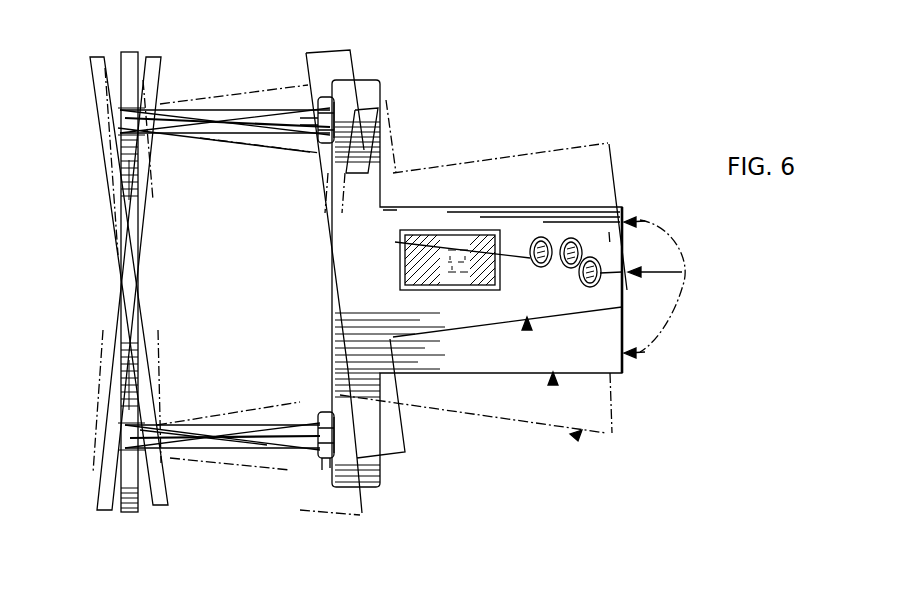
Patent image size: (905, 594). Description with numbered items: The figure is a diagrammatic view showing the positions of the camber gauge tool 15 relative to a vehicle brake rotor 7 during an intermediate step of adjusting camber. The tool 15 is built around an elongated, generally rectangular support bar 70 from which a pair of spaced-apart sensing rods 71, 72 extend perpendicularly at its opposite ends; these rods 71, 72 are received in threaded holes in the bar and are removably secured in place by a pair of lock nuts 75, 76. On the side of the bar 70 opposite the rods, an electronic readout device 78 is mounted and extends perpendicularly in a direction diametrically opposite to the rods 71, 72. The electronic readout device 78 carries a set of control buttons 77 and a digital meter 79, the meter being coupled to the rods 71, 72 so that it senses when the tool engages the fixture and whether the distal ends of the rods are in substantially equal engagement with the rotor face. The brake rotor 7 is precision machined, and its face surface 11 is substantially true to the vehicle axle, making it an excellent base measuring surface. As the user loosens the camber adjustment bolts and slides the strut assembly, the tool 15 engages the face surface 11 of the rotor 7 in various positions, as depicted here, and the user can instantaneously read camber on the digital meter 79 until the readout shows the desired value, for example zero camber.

The brake rotor 7 is at (105, 495).
The face surface 11 is at (110, 62).
The camber gauge tool 15 is at (527, 325).
The support bar 70 is at (372, 463).
The sensing rod 71 is at (240, 110).
The sensing rod 72 is at (217, 446).
The lock nut 75 is at (322, 95).
The lock nut 76 is at (323, 458).
The control buttons 77 is at (598, 238).
The electronic readout device 78 is at (665, 287).
The digital meter 79 is at (522, 212).